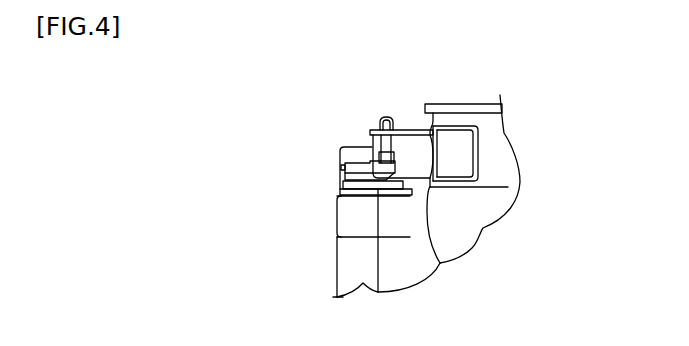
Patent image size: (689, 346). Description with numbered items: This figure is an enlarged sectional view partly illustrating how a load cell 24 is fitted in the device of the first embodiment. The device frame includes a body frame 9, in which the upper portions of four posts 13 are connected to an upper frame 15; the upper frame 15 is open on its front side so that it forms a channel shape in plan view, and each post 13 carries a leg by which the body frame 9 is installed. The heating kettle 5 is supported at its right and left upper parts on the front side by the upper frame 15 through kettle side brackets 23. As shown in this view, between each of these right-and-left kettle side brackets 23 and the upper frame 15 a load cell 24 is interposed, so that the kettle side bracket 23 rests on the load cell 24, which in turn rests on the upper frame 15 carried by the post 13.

The heating kettle 5 is at (488, 122).
The body frame 9 is at (329, 261).
The post 13 is at (345, 277).
The upper frame 15 is at (347, 213).
The kettle side bracket 23 is at (417, 129).
The load cell 24 is at (357, 163).